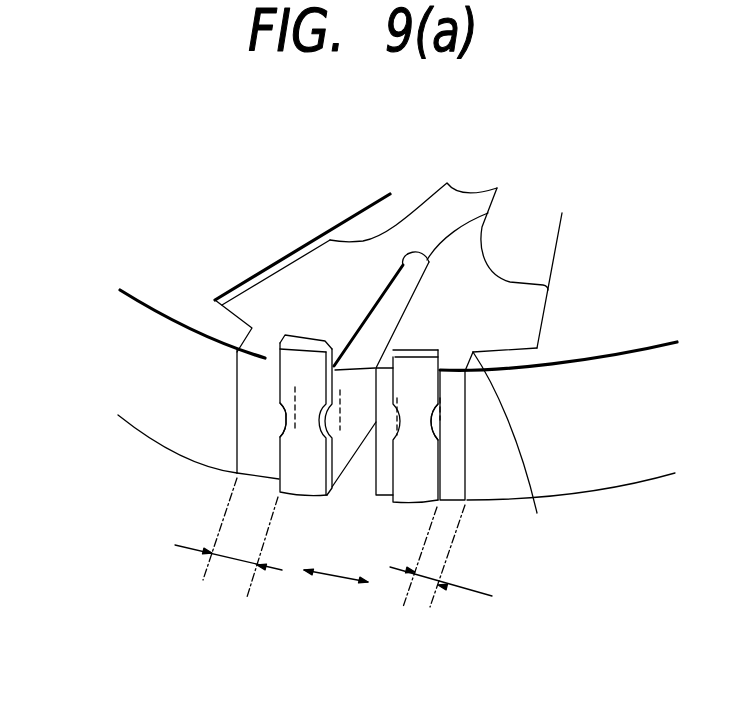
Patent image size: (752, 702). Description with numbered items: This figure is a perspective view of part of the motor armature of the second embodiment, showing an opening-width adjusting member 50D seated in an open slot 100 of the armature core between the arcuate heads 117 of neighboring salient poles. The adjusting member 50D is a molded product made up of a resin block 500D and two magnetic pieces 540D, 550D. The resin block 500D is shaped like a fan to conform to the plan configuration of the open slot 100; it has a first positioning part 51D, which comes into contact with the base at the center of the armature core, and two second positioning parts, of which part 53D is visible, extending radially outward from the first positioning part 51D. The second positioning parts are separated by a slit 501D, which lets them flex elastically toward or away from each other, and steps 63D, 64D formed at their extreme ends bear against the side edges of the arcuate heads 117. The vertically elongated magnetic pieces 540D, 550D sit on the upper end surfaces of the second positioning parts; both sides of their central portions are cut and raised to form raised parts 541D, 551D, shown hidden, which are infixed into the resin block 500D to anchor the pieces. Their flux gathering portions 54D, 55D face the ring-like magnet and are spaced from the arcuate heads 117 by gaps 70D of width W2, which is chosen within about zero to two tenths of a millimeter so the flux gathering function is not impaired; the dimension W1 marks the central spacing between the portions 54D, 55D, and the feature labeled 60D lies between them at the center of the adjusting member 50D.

The open slot 100 is at (553, 307).
The arcuate heads 117 is at (182, 392).
The gaps 70D is at (326, 497).
The width W1 is at (336, 562).
The gap width W2 is at (328, 554).
The flux gathering portion 55D is at (312, 494).
The magnetic piece 550D is at (288, 377).
The raised part 551D is at (295, 400).
The flux gathering portion 54D is at (407, 497).
The magnetic piece 540D is at (425, 443).
The raised part 541D is at (440, 420).
The pin / center rib 60D is at (392, 507).
The resin block 500D is at (352, 229).
The second positioning part 53D is at (293, 289).
The step 64D is at (250, 325).
The first positioning part 51D is at (463, 192).
The slit 501D is at (488, 213).
The opening-width adjusting member 50D is at (486, 236).
The step 63D is at (537, 513).